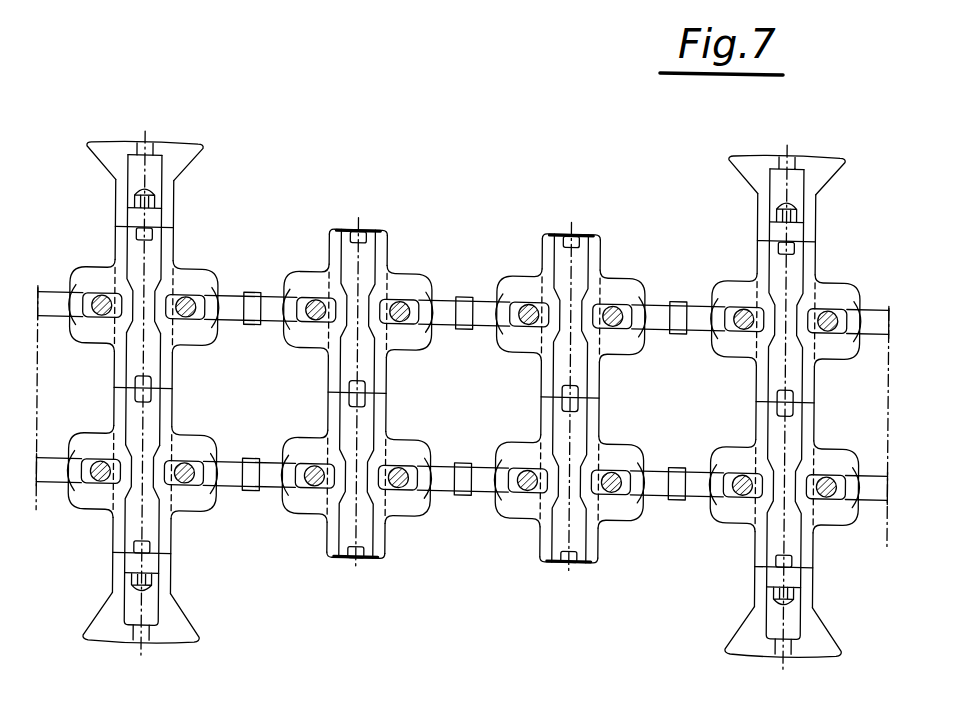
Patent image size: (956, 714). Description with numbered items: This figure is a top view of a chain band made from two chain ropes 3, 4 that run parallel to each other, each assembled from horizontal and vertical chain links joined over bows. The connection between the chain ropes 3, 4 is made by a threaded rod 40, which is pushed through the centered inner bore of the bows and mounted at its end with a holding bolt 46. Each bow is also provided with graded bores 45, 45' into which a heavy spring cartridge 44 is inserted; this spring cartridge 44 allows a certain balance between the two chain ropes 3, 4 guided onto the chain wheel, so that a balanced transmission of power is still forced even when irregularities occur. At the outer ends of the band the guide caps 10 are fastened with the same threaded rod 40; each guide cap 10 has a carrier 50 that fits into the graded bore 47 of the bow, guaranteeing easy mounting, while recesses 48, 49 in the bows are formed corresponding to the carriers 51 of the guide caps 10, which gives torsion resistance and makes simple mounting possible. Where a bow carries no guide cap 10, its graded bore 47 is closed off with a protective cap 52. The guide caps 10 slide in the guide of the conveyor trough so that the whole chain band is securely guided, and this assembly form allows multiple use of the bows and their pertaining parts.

The threaded rod 40 is at (143, 140).
The guide cap 10 is at (191, 155).
The holding bolt 46 is at (158, 200).
The graded bore 47 is at (160, 236).
The carrier 50 is at (140, 217).
The graded bore 45 is at (196, 361).
The heavy spring cartridge 44 is at (147, 397).
The graded bore 45' is at (200, 417).
The protective cap 52 is at (358, 230).
The recess 48 is at (572, 245).
The chain rope 3 is at (465, 300).
The chain rope 4 is at (465, 490).
The carrier 51 is at (770, 238).
The recess 49 is at (792, 247).